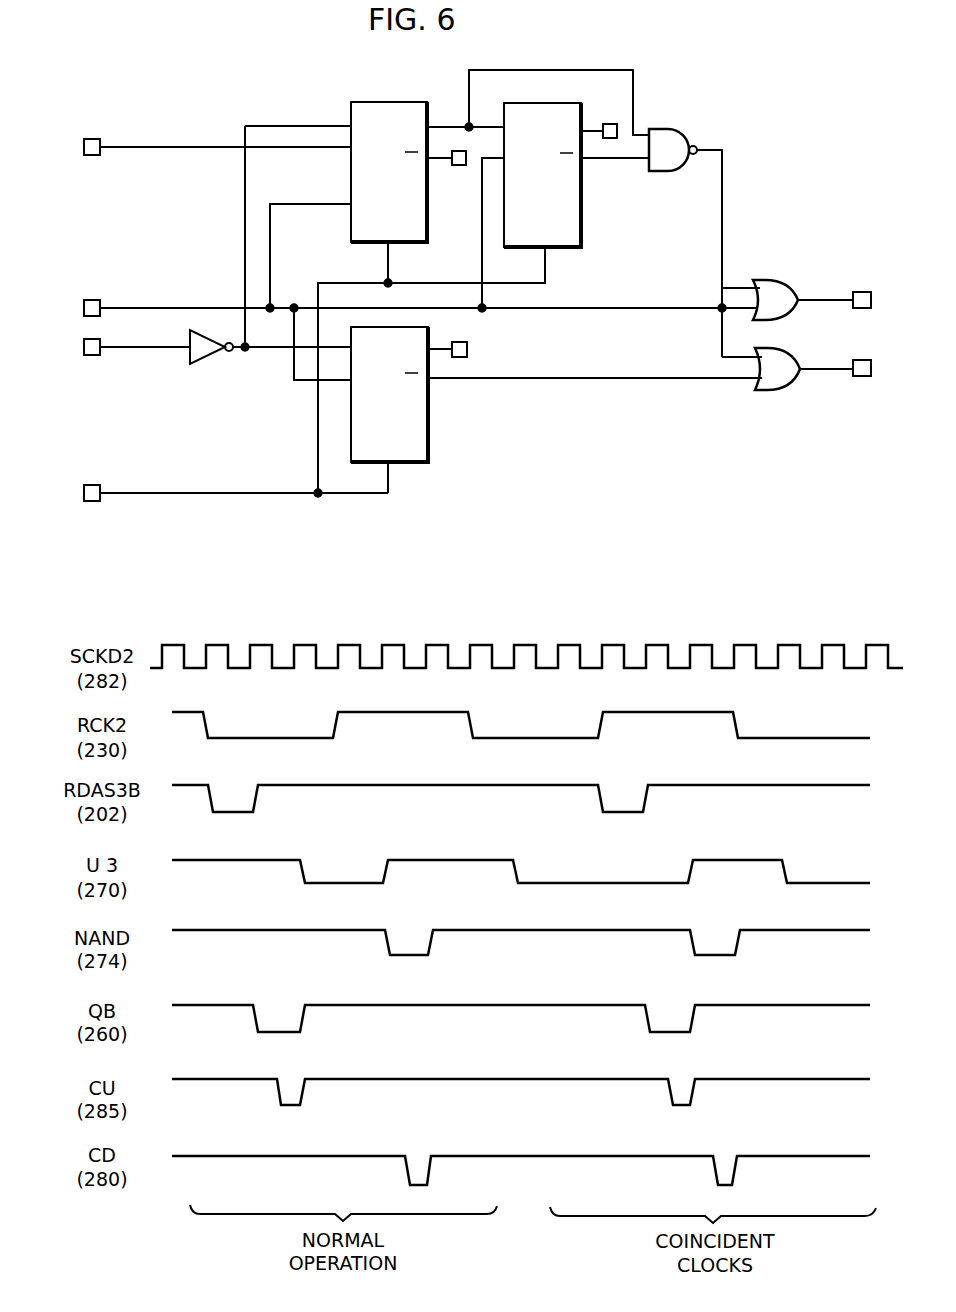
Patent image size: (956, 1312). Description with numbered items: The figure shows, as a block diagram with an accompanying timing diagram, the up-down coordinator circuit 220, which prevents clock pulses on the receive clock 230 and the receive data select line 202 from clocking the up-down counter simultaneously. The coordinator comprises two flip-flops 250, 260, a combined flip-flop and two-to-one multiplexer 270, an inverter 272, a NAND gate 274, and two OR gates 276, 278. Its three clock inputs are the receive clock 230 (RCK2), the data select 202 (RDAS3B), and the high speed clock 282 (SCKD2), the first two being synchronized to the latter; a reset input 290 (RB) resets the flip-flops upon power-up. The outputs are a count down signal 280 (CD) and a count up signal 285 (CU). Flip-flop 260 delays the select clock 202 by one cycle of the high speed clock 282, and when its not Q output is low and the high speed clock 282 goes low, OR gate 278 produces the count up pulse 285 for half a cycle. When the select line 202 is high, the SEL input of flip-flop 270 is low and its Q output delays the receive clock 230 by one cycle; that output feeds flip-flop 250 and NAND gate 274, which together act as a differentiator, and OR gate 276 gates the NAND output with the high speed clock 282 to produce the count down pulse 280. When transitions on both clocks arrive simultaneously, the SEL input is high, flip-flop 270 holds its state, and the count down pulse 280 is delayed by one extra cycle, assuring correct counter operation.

The up-down coordinator circuit 220 is at (592, 420).
The receive clock 230 is at (150, 147).
The high speed clock 282 is at (197, 307).
The receive data select line 202 is at (143, 348).
The inverter 272 is at (198, 366).
The reset input 290 is at (205, 493).
The combined flip-flop and two-to-one multiplexer 270 is at (390, 102).
The flip-flop 250 is at (550, 103).
The NAND gate 274 is at (680, 130).
The OR gate 276 is at (785, 280).
The count down signal 280 is at (830, 292).
The OR gate 278 is at (773, 392).
The count up signal 285 is at (825, 371).
The flip-flop 260 is at (428, 450).